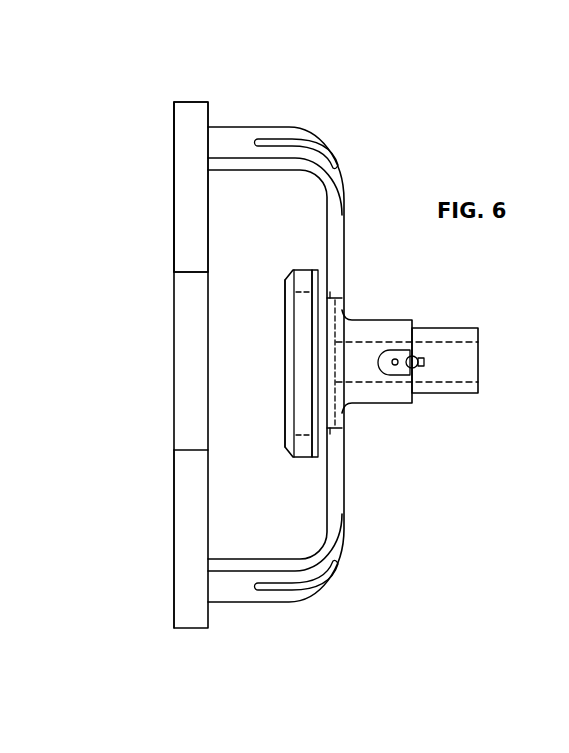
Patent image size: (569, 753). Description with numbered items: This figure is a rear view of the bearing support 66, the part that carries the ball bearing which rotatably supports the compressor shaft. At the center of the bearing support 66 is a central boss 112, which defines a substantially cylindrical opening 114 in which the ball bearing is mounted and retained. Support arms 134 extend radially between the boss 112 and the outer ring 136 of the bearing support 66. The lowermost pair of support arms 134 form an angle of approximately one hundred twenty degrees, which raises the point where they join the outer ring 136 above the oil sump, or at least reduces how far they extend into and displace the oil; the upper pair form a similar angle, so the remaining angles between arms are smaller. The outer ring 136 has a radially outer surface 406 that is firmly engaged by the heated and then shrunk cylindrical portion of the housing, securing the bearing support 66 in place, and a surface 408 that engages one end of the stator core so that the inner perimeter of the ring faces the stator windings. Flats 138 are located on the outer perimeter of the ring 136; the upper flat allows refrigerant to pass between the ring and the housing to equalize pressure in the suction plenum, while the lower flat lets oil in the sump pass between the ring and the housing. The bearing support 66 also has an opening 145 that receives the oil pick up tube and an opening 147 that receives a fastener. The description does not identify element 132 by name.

The bearing support 66 is at (332, 80).
The radially outer surface 406 is at (186, 124).
The surface 408 is at (160, 242).
The outer ring 136 is at (188, 186).
The flats 138 is at (190, 432).
The support arms 134 is at (230, 136).
The central boss 112 is at (296, 268).
The cylindrical opening 114 is at (274, 356).
The spacer plate 132 is at (311, 460).
The opening 147 is at (395, 358).
The opening 145 is at (416, 368).